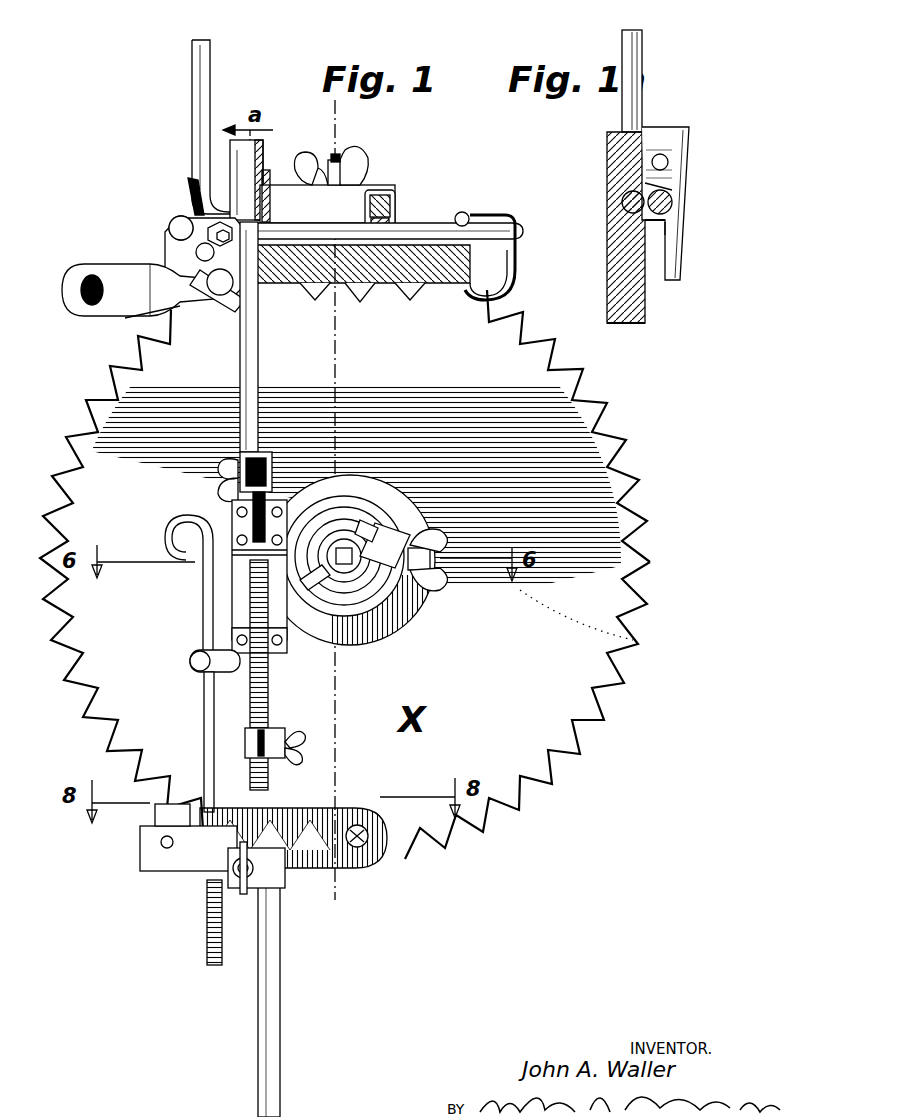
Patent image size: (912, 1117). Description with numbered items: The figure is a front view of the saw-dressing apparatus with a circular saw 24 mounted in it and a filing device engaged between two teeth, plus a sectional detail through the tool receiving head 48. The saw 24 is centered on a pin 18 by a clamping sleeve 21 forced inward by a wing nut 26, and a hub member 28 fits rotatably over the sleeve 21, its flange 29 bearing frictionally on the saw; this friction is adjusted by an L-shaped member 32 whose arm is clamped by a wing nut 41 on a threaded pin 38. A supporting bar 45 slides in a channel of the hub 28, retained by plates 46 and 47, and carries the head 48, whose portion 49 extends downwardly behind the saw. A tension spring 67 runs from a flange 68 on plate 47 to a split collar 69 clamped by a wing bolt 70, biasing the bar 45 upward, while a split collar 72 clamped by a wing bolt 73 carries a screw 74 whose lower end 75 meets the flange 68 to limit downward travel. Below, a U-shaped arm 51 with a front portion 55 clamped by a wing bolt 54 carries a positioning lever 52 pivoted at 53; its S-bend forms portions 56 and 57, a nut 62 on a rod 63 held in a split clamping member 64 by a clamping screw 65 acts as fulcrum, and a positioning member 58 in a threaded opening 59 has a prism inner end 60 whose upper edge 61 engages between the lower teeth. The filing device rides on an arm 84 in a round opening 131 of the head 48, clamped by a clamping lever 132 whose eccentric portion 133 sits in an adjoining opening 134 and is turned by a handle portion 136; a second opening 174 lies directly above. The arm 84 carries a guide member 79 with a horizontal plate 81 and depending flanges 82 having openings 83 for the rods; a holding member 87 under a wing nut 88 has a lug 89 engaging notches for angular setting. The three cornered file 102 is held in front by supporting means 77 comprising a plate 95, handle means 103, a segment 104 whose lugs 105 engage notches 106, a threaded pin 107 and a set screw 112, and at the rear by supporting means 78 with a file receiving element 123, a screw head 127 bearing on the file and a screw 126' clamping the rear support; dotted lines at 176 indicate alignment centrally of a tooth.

In FIG. 1, the handle portion 136 is at (190, 62).
In FIG. 1A, the handle portion 136 is at (622, 40).
In FIG. 1, the tool receiving and supporting head 48 is at (242, 165).
In FIG. 1A, the tool receiving and supporting head 48 is at (612, 152).
In FIG. 1, the downwardly projecting lug 89 is at (270, 175).
In FIG. 1, the holding member 87 is at (305, 170).
In FIG. 1, the wing nut 88 is at (355, 160).
In FIG. 1, the guide member 79 is at (350, 200).
In FIG. 1, the horizontal plate 81 is at (392, 196).
In FIG. 1, the openings 83 is at (392, 206).
In FIG. 1, the tooth alignment indication 176 is at (392, 226).
In FIG. 1, the screw 126' is at (477, 197).
In FIG. 1, the rear file supporting means 78 is at (495, 214).
In FIG. 1, the head 127 is at (500, 237).
In FIG. 1, the three cornered file 102 is at (495, 262).
In FIG. 1, the file receiving element 123 is at (500, 288).
In FIG. 1, the depending flanges 82 is at (372, 285).
In FIG. 1, the forward file supporting means 77 is at (172, 252).
In FIG. 1, the set screw 112 is at (178, 222).
In FIG. 1, the threaded pin 107 is at (190, 187).
In FIG. 1, the segment 104 is at (190, 258).
In FIG. 1, the handle means 103 is at (100, 318).
In FIG. 1, the notches 106 is at (150, 316).
In FIG. 1, the lugs 105 is at (215, 305).
In FIG. 1, the plate 95 is at (228, 318).
In FIG. 1, the supporting bar 45 is at (240, 357).
In FIG. 1A, the supporting bar 45 is at (620, 298).
In FIG. 1, the circular saw 24 is at (515, 353).
In FIG. 1, the split collar 72 is at (268, 462).
In FIG. 1, the wing bolt 73 is at (225, 470).
In FIG. 1, the threaded pin or screw 74 is at (285, 450).
In FIG. 1, the plate 47 is at (348, 520).
In FIG. 1, the hub member 28 is at (385, 540).
In FIG. 1, the L-shaped member 32 is at (420, 510).
In FIG. 1, the lower end 75 is at (250, 535).
In FIG. 1, the flange 68 is at (245, 560).
In FIG. 1, the rod 63 is at (203, 615).
In FIG. 1, the clamping screw 65 is at (195, 662).
In FIG. 1, the split clamping member 64 is at (215, 690).
In FIG. 1, the wing nut 41 is at (438, 545).
In FIG. 1, the threaded pin 38 is at (432, 562).
In FIG. 1, the wing nut 26 is at (440, 588).
In FIG. 1, the flange 29 is at (420, 610).
In FIG. 1, the clamping sleeve 21 is at (380, 630).
In FIG. 1, the pin or bolt 18 is at (374, 577).
In FIG. 1, the plate 46 is at (287, 648).
In FIG. 1, the tension spring 67 is at (275, 700).
In FIG. 1, the wing bolt 70 is at (295, 745).
In FIG. 1, the split collar 69 is at (252, 758).
In FIG. 1, the positioning lever 52 is at (285, 830).
In FIG. 1, the upper edge 61 is at (362, 808).
In FIG. 1, the pivot pin 53 is at (160, 852).
In FIG. 1, the horizontal arm 51 is at (150, 878).
In FIG. 1, the portion 56 is at (160, 885).
In FIG. 1, the portion 57 is at (188, 878).
In FIG. 1, the nut 62 is at (212, 890).
In FIG. 1, the wing bolt 54 is at (243, 895).
In FIG. 1, the portion 55 is at (282, 872).
In FIG. 1, the positioning member 58 is at (355, 850).
In FIG. 1, the inner end 60 is at (368, 860).
In FIG. 1, the threaded opening 59 is at (385, 840).
In FIG. 1A, the second opening 174 is at (662, 155).
In FIG. 1A, the eccentric portion 133 is at (668, 182).
In FIG. 1A, the clamping lever 132 is at (620, 202).
In FIG. 1A, the arm 84 is at (674, 202).
In FIG. 1A, the opening 134 is at (643, 222).
In FIG. 1A, the round opening 131 is at (668, 218).
In FIG. 1A, the portion 49 is at (676, 255).